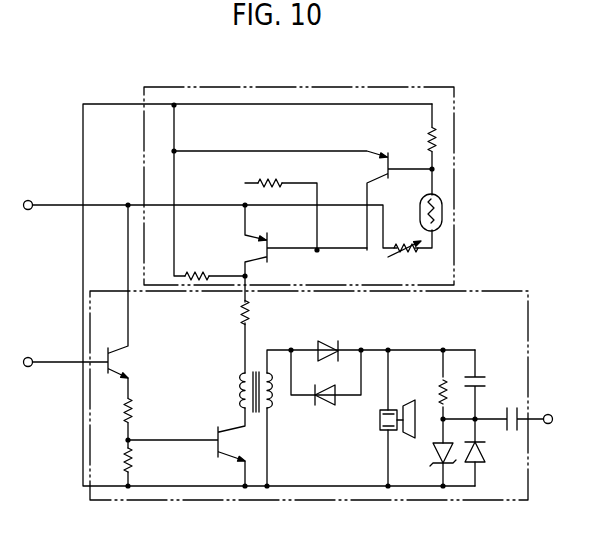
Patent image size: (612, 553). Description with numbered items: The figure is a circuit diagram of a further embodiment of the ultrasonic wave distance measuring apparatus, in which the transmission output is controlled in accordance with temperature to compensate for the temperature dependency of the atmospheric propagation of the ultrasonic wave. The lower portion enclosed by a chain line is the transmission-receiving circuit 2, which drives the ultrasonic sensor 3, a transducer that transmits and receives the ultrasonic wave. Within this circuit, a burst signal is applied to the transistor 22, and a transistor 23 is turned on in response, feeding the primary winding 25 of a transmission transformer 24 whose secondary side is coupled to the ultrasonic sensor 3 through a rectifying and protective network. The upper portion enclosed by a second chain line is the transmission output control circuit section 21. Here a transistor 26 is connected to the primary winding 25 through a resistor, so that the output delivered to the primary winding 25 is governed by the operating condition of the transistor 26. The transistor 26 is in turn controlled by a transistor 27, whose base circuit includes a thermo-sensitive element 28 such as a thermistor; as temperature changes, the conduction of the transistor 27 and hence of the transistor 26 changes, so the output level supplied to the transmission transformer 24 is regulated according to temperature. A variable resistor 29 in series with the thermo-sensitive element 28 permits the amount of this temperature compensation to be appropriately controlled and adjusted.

The transmission-receiving circuit 2 is at (507, 290).
The ultrasonic sensor 3 is at (404, 434).
The transmission output control circuit section 21 is at (455, 124).
The transistor 22 is at (124, 360).
The transistor 23 is at (229, 418).
The transmission transformer 24 is at (239, 404).
The primary winding 25 is at (238, 390).
The transistor 26 is at (256, 248).
The transistor 27 is at (378, 168).
The thermo-sensitive element 28 is at (418, 217).
The variable resistor 29 is at (403, 254).